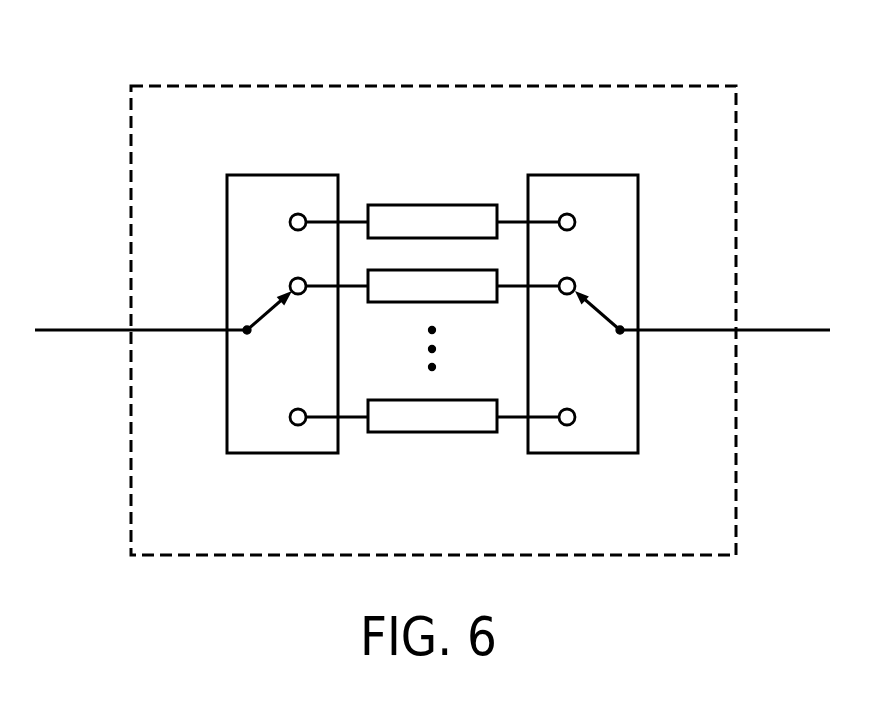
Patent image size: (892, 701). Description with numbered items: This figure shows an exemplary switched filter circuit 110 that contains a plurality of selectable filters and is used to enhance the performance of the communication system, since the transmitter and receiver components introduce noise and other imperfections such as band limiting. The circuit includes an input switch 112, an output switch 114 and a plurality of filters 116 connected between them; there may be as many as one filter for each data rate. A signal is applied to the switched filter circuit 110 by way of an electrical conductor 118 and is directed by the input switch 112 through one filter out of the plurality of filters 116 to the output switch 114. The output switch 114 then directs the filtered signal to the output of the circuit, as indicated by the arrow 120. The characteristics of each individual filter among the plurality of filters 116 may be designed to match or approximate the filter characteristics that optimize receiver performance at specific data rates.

The switched filter circuit 110 is at (492, 556).
The input switch 112 is at (280, 453).
The output switch 114 is at (578, 453).
The plurality of filters 116 is at (435, 432).
The electrical conductor 118 is at (83, 330).
The arrow 120 is at (762, 330).